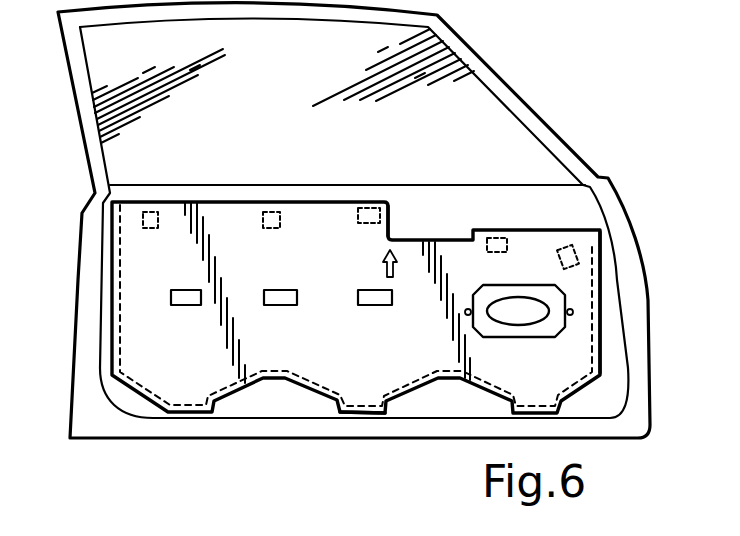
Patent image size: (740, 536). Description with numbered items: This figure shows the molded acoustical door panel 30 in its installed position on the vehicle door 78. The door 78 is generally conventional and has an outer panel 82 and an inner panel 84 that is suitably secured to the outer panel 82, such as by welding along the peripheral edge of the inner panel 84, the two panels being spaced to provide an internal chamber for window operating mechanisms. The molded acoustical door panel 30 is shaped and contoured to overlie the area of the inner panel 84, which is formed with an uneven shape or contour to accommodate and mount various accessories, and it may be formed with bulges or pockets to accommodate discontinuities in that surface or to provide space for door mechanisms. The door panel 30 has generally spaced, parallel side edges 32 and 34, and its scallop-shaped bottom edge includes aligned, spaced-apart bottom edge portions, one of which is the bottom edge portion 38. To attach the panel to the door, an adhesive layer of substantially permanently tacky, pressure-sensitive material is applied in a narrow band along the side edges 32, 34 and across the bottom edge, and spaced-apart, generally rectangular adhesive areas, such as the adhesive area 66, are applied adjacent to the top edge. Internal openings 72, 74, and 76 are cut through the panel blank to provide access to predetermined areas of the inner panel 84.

The vehicle door 78 is at (503, 73).
The molded acoustical door panel 30 is at (349, 285).
The side edge 32 is at (605, 272).
The side edge 34 is at (112, 338).
The adhesive area 66 is at (398, 207).
The opening 72 is at (365, 295).
The opening 74 is at (271, 295).
The opening 76 is at (178, 295).
The bottom edge portion 38 is at (343, 416).
The outer panel 82 is at (78, 262).
The inner panel 84 is at (110, 391).